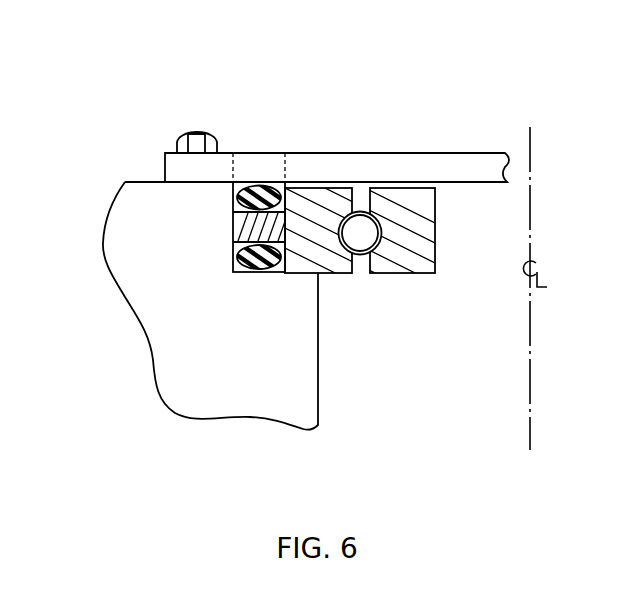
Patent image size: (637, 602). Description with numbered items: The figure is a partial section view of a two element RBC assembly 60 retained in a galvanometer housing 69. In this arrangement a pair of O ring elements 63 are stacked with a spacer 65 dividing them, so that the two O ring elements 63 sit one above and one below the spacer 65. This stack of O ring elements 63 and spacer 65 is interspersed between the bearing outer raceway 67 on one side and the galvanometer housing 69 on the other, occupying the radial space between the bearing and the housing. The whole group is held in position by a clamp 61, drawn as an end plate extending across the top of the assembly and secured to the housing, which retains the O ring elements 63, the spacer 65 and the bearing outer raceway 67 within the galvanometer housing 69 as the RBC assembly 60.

The two element RBC assembly 60 is at (120, 30).
The clamp 61 is at (255, 141).
The O ring elements 63 is at (233, 257).
The spacer 65 is at (235, 233).
The bearing outer raceway 67 is at (328, 273).
The galvanometer housing 69 is at (318, 398).